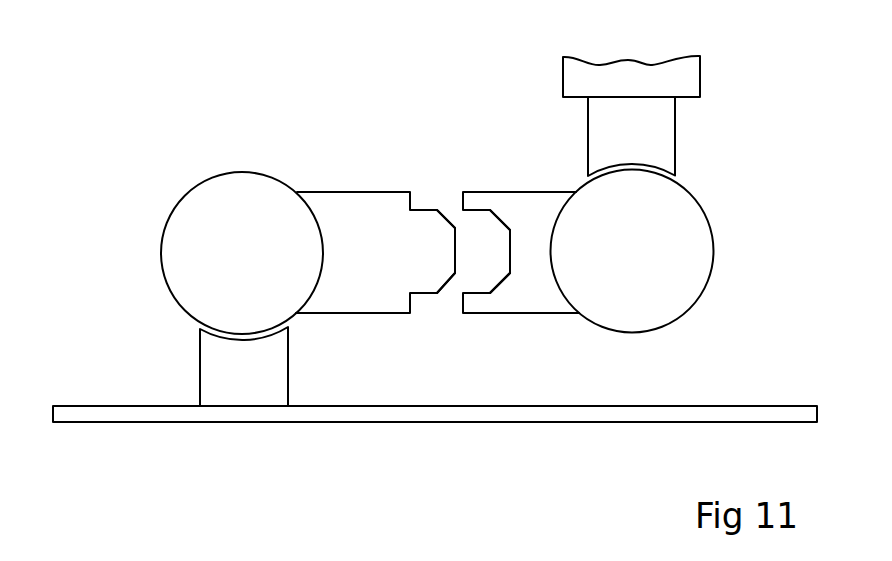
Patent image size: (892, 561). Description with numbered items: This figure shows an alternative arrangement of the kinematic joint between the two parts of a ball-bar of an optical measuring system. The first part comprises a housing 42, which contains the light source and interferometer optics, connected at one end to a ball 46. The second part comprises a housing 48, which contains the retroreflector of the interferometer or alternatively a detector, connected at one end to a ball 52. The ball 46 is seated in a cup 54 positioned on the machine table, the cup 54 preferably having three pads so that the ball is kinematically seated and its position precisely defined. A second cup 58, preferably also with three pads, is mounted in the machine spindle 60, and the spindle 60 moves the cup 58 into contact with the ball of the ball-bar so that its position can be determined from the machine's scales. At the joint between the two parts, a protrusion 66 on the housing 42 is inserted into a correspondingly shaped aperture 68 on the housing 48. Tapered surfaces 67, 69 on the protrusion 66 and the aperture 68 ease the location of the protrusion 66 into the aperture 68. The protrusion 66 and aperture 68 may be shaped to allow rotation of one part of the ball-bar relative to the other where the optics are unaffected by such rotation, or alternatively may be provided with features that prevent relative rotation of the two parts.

The housing 42 is at (352, 191).
The ball 46 is at (213, 223).
The housing 48 is at (507, 192).
The ball 52 is at (675, 252).
The cup 54 is at (228, 365).
The second cup 58 is at (677, 135).
The machine spindle 60 is at (588, 78).
The protrusion 66 is at (428, 268).
The tapered surface 67 is at (447, 215).
The aperture 68 is at (498, 260).
The tapered surface 69 is at (500, 260).